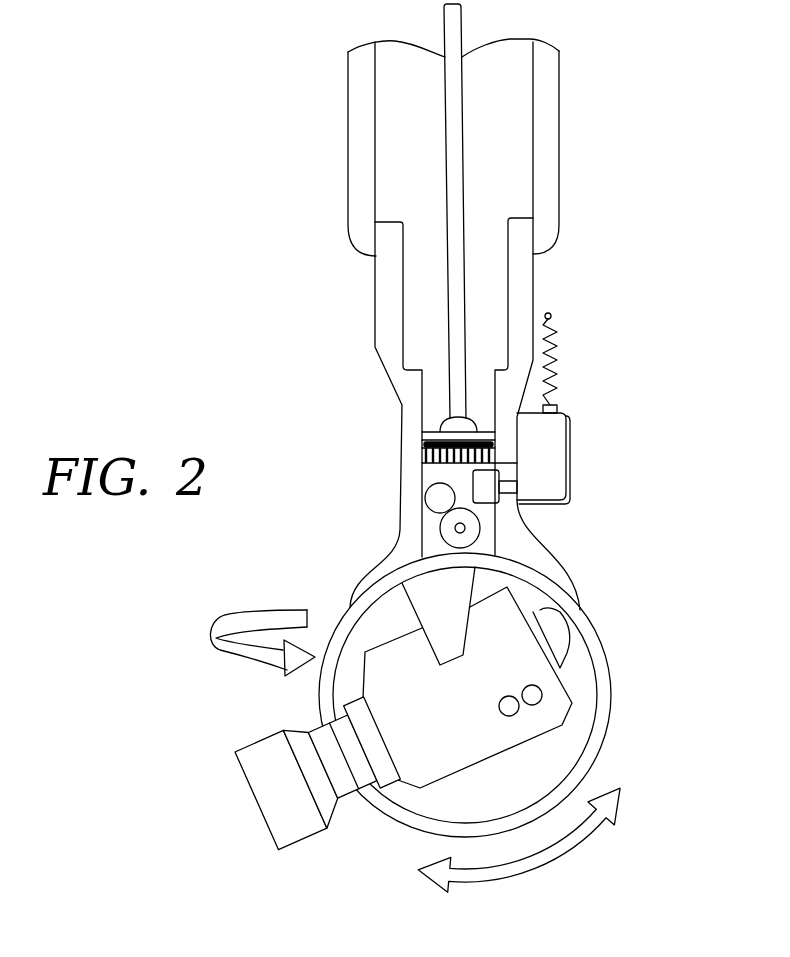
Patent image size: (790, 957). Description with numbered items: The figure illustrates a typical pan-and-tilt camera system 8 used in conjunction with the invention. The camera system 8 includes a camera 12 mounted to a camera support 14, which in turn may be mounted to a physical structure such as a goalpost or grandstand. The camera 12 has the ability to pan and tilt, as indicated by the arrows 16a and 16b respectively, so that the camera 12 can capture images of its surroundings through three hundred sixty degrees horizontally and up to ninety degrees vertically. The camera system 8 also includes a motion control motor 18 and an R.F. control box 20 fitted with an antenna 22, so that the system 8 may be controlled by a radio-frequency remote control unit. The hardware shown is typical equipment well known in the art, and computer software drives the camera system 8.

The pan-and-tilt camera system 8 is at (642, 496).
The camera 12 is at (513, 677).
The camera support 14 is at (548, 212).
The pan arrow 16a is at (260, 620).
The tilt arrow 16b is at (588, 838).
The motion control motor 18 is at (490, 537).
The R.F. control box 20 is at (550, 448).
The antenna 22 is at (551, 316).